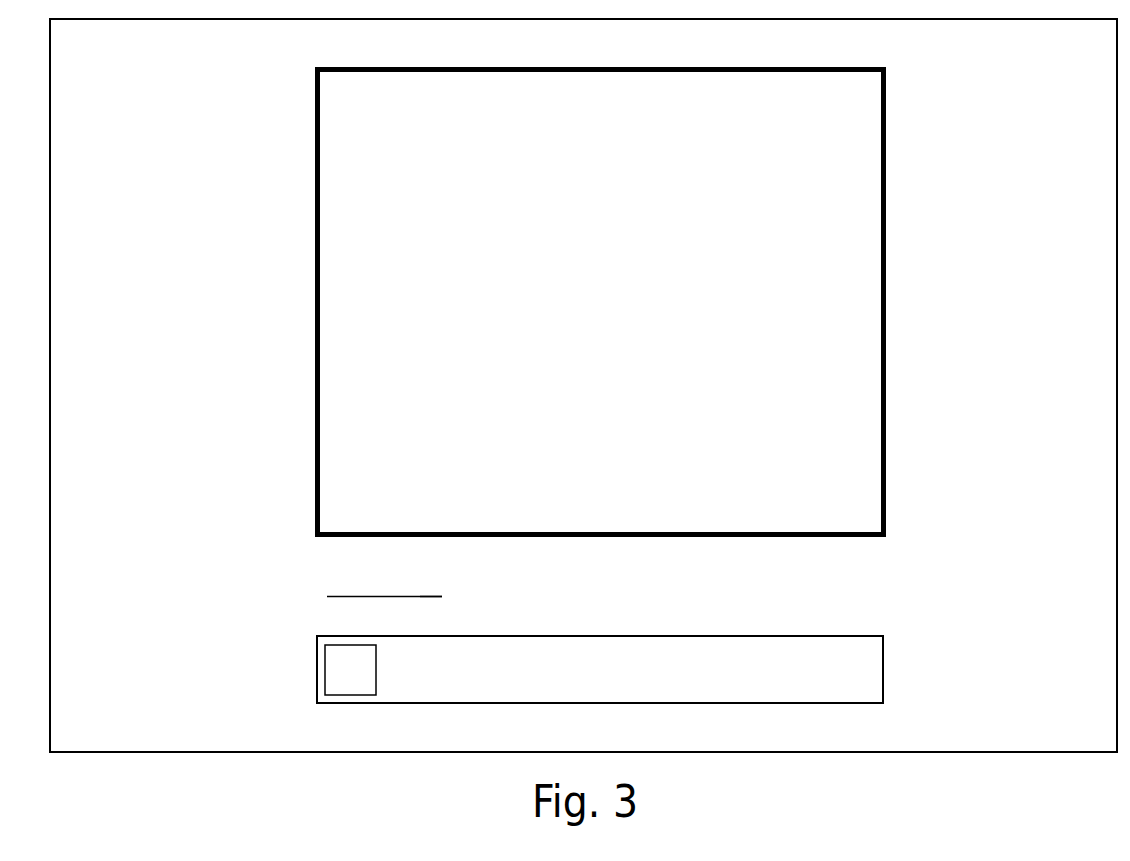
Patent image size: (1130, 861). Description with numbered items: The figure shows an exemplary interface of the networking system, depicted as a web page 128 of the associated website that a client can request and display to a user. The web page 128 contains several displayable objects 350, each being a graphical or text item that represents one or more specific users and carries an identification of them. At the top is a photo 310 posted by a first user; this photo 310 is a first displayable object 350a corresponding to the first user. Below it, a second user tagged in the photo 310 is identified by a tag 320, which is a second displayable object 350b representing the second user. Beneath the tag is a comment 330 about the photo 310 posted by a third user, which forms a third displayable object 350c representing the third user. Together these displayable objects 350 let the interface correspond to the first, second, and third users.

The web page 128 is at (1017, 96).
The photo 310 is at (315, 184).
The tag 320 is at (320, 587).
The comment 330 is at (317, 670).
The displayable object 350 is at (886, 185).
The first displayable object 350a is at (886, 237).
The second displayable object 350b is at (445, 587).
The third displayable object 350c is at (884, 669).